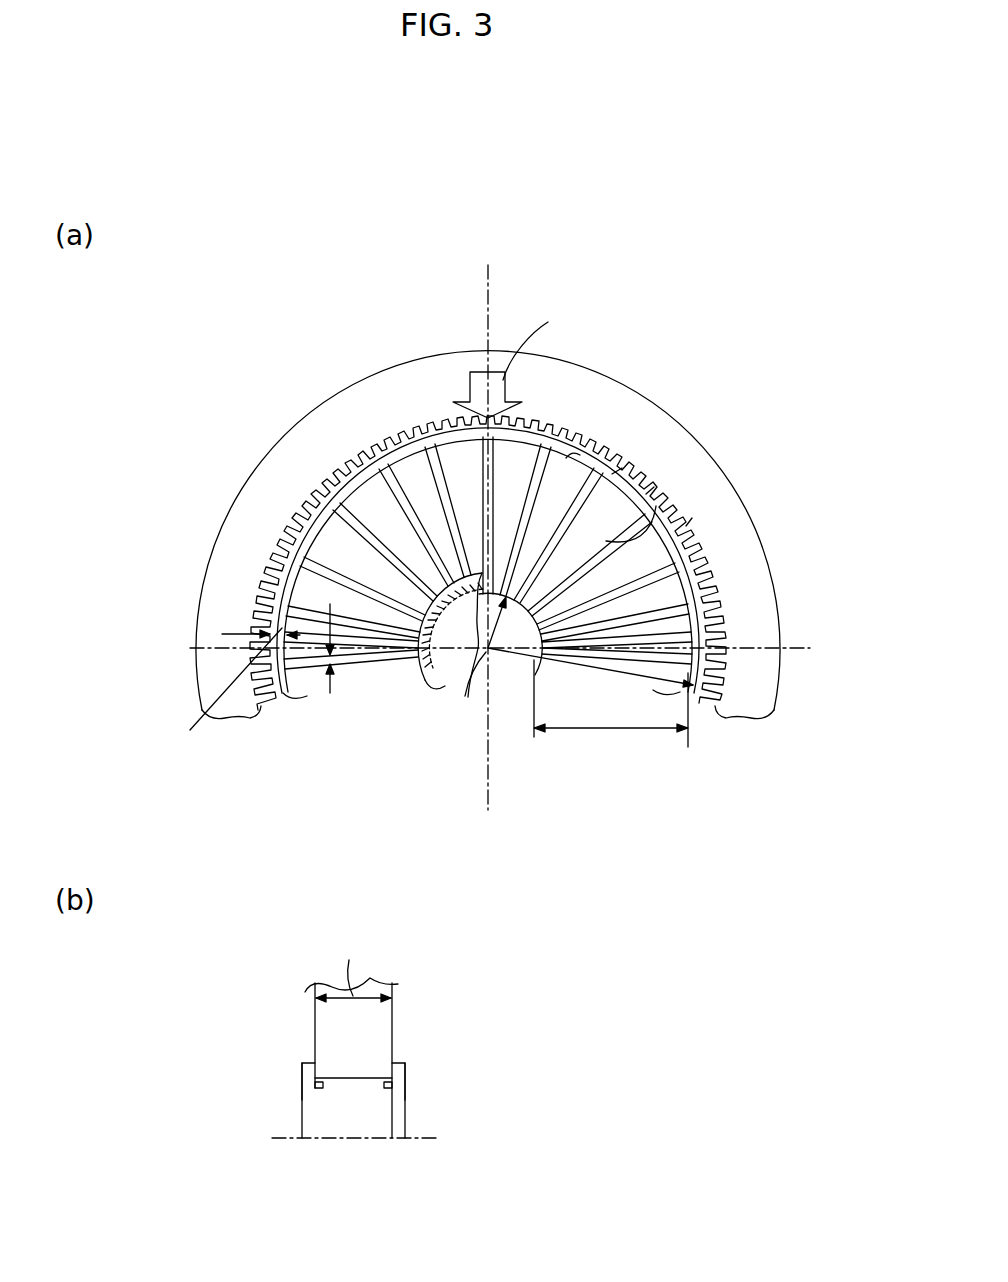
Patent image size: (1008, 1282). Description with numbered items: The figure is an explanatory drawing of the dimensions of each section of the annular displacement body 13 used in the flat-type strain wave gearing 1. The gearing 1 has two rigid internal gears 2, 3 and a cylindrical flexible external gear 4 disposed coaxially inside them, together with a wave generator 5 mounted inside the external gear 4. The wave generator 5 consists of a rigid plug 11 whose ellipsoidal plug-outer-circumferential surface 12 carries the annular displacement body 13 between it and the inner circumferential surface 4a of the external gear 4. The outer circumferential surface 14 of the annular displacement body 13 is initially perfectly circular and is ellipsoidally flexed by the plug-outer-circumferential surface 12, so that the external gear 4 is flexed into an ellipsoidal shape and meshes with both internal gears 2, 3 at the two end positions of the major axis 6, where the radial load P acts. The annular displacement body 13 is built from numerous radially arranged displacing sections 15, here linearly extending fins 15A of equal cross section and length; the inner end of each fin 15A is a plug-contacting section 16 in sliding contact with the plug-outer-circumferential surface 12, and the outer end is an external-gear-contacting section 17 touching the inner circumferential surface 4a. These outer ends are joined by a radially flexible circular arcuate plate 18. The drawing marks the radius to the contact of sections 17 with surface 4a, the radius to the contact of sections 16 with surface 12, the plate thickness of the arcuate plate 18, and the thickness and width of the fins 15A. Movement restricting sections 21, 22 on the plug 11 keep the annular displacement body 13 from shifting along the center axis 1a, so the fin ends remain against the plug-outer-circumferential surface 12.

The strain wave gearing 1 is at (503, 715).
The center axis 1a is at (418, 1140).
The rigid internal gear 2 is at (488, 513).
The rigid internal gear 3 is at (336, 428).
The cylindrical flexible external gear 4 is at (298, 505).
The inner circumferential surface 4a is at (572, 452).
The wave generator 5 is at (302, 572).
The major axis 6 is at (506, 264).
The plug 11 is at (353, 838).
The plug-outer-circumferential surface 12 is at (706, 594).
The annular displacement body 13 is at (455, 631).
The outer circumferential surface 14 is at (617, 470).
The displacing sections 15 is at (549, 783).
The fins 15A is at (548, 783).
The plug-contacting section 16 is at (707, 560).
The external-gear-contacting section 17 is at (689, 522).
The circular arcuate plate 18 is at (650, 490).
The movement restricting section 21 is at (361, 853).
The movement restricting section 22 is at (400, 1100).